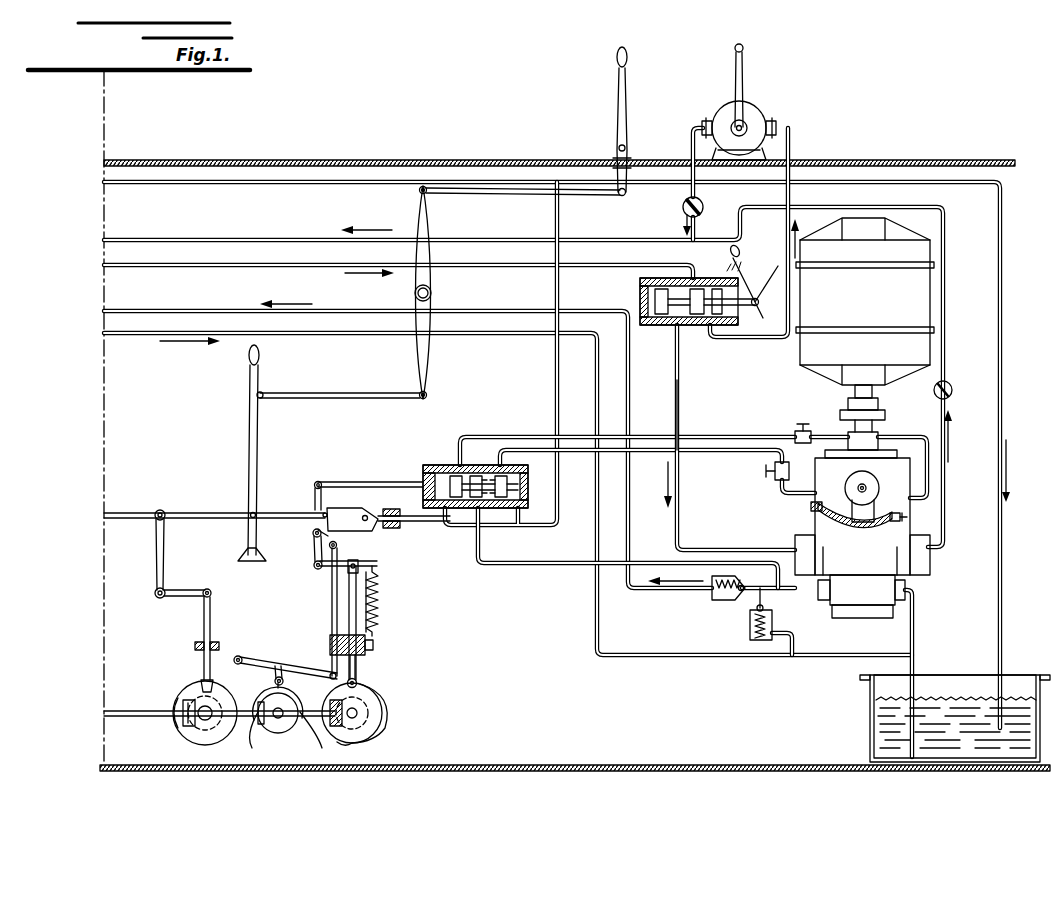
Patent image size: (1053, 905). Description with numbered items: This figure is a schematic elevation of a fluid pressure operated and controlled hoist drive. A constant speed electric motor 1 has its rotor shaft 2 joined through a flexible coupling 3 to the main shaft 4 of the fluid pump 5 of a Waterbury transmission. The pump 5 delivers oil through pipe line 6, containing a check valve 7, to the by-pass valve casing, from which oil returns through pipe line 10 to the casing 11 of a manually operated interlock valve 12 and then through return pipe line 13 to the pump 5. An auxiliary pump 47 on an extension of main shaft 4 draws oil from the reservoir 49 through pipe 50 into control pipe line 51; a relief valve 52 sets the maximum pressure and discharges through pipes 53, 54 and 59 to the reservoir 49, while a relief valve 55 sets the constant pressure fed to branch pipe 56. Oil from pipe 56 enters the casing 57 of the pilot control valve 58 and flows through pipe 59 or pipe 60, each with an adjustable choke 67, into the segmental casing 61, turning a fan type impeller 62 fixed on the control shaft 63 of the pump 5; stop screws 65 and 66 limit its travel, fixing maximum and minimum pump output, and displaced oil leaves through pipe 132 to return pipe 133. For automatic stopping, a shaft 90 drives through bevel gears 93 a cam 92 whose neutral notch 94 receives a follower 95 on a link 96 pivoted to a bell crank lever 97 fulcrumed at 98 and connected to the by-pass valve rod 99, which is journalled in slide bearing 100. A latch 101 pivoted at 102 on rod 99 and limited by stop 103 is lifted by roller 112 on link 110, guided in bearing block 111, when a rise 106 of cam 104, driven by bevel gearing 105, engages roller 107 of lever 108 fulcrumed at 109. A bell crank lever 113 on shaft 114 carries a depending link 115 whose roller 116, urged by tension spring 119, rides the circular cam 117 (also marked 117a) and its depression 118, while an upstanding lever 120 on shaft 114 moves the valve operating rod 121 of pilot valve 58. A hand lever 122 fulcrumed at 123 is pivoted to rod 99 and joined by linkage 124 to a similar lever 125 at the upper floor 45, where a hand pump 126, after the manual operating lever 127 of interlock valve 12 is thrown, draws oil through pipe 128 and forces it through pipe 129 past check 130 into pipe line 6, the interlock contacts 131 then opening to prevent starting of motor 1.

The electric motor 1 is at (865, 301).
The rotor shaft 2 is at (873, 392).
The flexible coupling 3 is at (880, 412).
The main shaft 4 is at (878, 428).
The fluid pump 5 is at (790, 468).
The pipe line 6 is at (206, 238).
The check valve 7 is at (952, 390).
The return pipe line 10 is at (262, 267).
The casing 11 is at (640, 288).
The interlock valve 12 is at (680, 327).
The return pipe line 13 is at (676, 399).
The floor 45 is at (293, 160).
The auxiliary pump 47 is at (846, 608).
The reservoir 49 is at (869, 723).
The pipe 50 is at (915, 638).
The control pipe line 51 is at (200, 309).
The relief valve 52 is at (750, 626).
The pipe 53 is at (794, 634).
The pipe 54 is at (300, 336).
The relief valve 55 is at (712, 593).
The pipe 56 is at (644, 562).
The casing 57 is at (429, 465).
The pilot control valve 58 is at (480, 478).
The pipe 59 is at (610, 452).
The pipe 60 is at (718, 437).
The segmental casing 61 is at (853, 528).
The impeller 62 is at (850, 500).
The control shaft 63 is at (870, 487).
The stop screw 65 is at (811, 507).
The stop screw 66 is at (907, 518).
The adjustable chokes 67 is at (805, 422).
The shaft 90 is at (104, 715).
The cam 92 is at (195, 692).
The bevel gears 93 is at (195, 745).
The neutral position notch 94 is at (216, 697).
The follower 95 is at (203, 680).
The link 96 is at (212, 620).
The bell crank lever 97 is at (155, 561).
The fulcrum 98 is at (157, 599).
The rod 99 is at (124, 512).
The fixed slide bearing 100 is at (404, 521).
The latch 101 is at (349, 514).
The pivot 102 is at (395, 507).
The stop 103 is at (323, 512).
The cam 104 is at (270, 742).
The bevel gearing 105 is at (246, 735).
The rises 106 is at (327, 738).
The roller 107 is at (285, 688).
The lever 108 is at (295, 664).
The fulcrum 109 is at (240, 657).
The link 110 is at (332, 609).
The fixed slide bearing block 111 is at (373, 648).
The roller 112 is at (337, 546).
The bell crank lever 113 is at (314, 565).
The shaft 114 is at (337, 612).
The link 115 is at (379, 583).
The roller 116 is at (313, 534).
The circular cam 117 is at (384, 722).
The crank 117a is at (368, 742).
The peripheral depression 118 is at (378, 690).
The tension spring 119 is at (380, 604).
The upstanding lever 120 is at (317, 481).
The valve operating rod 121 is at (370, 482).
The hand lever 122 is at (250, 376).
The fulcrum 123 is at (247, 553).
The linkage 124 is at (472, 193).
The lever 125 is at (618, 92).
The hand operated pump 126 is at (758, 112).
The manual operating lever 127 is at (743, 252).
The pipe 128 is at (748, 340).
The pipe 129 is at (692, 139).
The check 130 is at (683, 208).
The interlock contacts 131 is at (760, 287).
The pipe 132 is at (523, 526).
The return pipe 133 is at (866, 186).